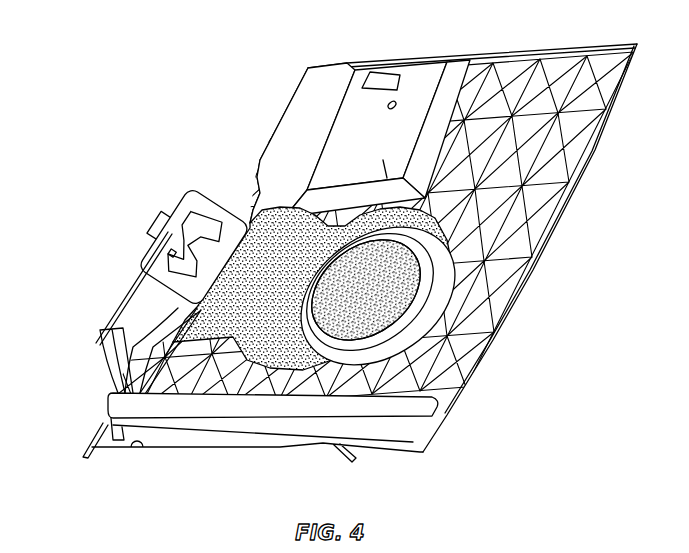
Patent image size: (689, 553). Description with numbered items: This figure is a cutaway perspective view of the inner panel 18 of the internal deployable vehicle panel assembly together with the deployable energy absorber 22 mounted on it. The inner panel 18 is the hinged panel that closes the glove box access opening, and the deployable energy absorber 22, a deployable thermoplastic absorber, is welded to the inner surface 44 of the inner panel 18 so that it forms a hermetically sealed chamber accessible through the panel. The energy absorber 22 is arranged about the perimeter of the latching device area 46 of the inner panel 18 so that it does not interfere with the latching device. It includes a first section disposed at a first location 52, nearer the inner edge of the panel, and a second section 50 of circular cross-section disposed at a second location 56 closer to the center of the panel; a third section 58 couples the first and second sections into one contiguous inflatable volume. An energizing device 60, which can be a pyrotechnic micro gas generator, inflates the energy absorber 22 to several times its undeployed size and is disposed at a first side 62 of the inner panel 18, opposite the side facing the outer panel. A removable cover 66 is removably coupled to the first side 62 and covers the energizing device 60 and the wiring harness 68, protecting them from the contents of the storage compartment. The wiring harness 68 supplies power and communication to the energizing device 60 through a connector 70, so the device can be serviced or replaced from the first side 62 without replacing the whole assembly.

The inner panel 18 is at (573, 195).
The deployable energy absorber 22 is at (273, 353).
The inner surface 44 is at (433, 267).
The latching device area 46 is at (390, 122).
The second section 50 is at (373, 310).
The first location 52 is at (212, 355).
The second location 56 is at (437, 230).
The third section 58 is at (307, 253).
The energizing device 60 is at (173, 256).
The first side 62 is at (162, 310).
The removable cover 66 is at (137, 277).
The wiring harness 68 is at (120, 327).
The connector 70 is at (157, 268).